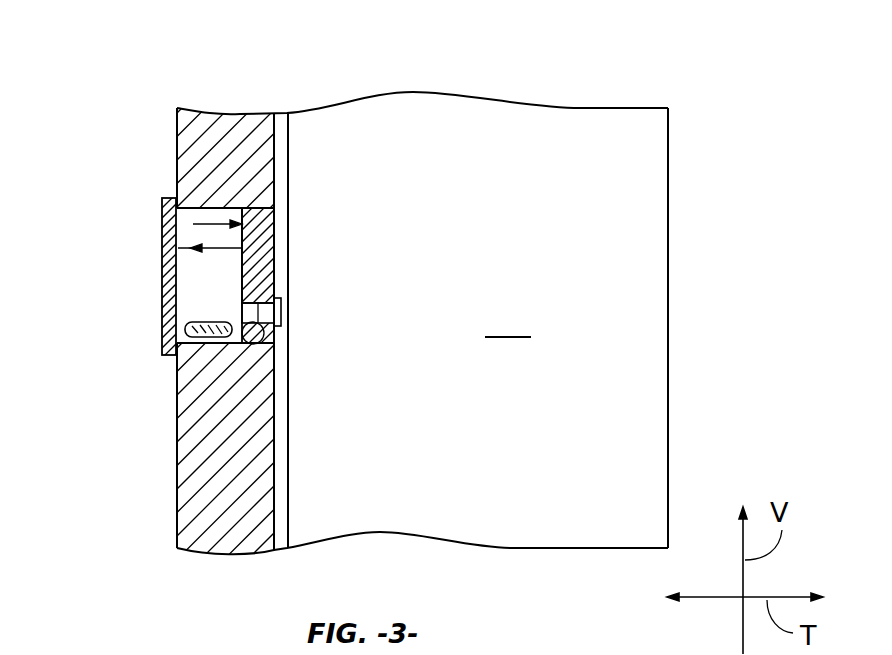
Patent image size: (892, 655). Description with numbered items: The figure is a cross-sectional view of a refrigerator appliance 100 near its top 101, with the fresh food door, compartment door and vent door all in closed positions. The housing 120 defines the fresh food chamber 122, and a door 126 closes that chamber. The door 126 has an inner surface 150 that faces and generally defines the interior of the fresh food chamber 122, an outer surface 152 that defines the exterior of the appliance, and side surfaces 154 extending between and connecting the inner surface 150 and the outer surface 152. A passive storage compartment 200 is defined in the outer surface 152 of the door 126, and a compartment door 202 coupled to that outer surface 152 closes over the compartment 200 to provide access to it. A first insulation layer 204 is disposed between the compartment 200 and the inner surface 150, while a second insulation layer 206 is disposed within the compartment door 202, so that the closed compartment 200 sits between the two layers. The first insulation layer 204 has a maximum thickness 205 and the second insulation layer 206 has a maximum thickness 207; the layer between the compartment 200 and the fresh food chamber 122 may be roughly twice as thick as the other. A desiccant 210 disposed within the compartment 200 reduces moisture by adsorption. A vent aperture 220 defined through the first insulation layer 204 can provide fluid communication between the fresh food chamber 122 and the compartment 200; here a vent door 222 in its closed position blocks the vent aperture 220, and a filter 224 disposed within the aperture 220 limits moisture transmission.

The refrigerator appliance 100 is at (614, 82).
The top 101 is at (685, 108).
The housing 120 is at (669, 350).
The fresh food chamber 122 is at (511, 321).
The door 126 is at (148, 424).
The inner surface 150 is at (288, 437).
The outer surface 152 is at (176, 482).
The side surface 154 is at (216, 106).
The passive storage compartment 200 is at (232, 297).
The compartment door 202 is at (157, 218).
The first insulation layer 204 is at (265, 255).
The maximum thickness of first insulation layer 205 is at (287, 224).
The second insulation layer 206 is at (160, 280).
The maximum thickness of second insulation layer 207 is at (150, 247).
The desiccant 210 is at (202, 340).
The vent aperture 220 is at (262, 322).
The vent door 222 is at (282, 312).
The filter 224 is at (243, 327).